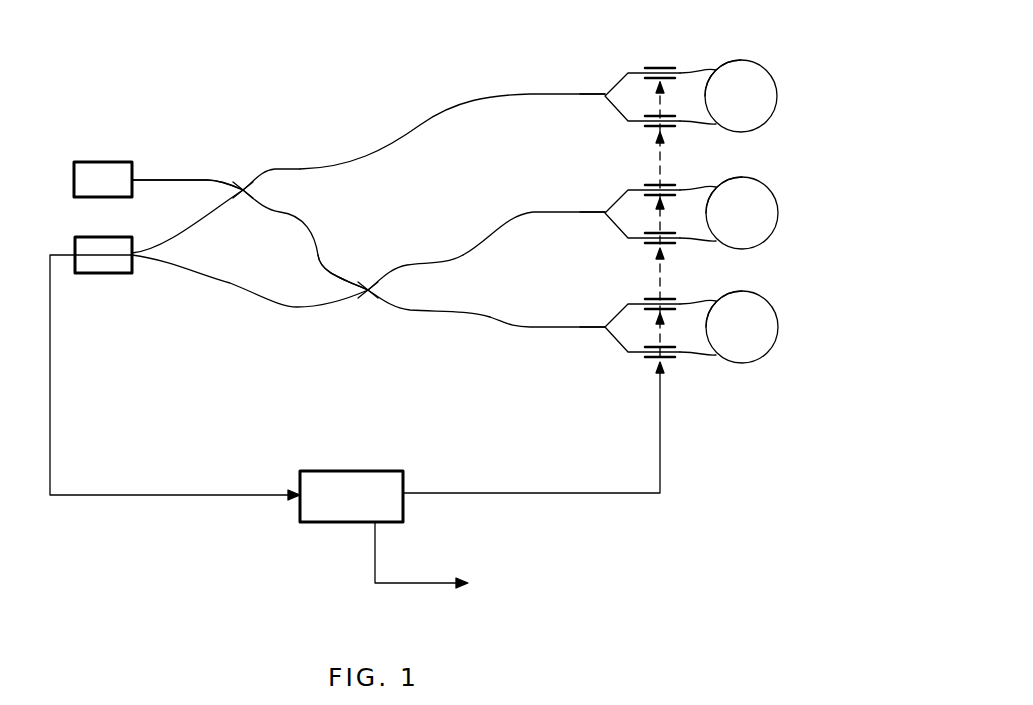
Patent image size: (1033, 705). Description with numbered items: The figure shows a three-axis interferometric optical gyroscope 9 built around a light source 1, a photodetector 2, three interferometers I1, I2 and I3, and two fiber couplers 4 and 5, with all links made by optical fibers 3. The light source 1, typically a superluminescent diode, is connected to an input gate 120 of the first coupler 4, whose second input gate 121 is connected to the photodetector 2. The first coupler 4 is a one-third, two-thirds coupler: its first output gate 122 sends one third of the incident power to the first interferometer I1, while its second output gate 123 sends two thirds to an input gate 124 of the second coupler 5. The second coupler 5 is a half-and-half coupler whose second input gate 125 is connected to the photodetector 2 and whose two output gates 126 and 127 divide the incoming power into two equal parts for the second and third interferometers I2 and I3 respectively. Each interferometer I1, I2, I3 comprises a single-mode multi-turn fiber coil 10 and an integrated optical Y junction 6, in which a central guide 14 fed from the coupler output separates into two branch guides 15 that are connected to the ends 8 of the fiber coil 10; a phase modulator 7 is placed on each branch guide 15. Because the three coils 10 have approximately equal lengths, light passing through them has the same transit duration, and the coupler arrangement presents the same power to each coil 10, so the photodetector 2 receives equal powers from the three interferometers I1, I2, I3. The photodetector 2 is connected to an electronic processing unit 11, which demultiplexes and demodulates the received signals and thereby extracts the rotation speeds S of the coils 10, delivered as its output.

The light source 1 is at (95, 162).
The photodetector 2 is at (97, 273).
The optical fibers 3 is at (455, 110).
The first coupler 4 is at (245, 178).
The second coupler 5 is at (368, 310).
The integrated optical Y junction 6 is at (608, 76).
The phase modulator 7 is at (667, 70).
The ends of fiber coils 8 is at (712, 68).
The optical gyroscope 9 is at (357, 98).
The single-mode optical fiber multi-turn coil 10 is at (778, 97).
The electronic processing unit 11 is at (333, 471).
The central guide 14 is at (587, 96).
The branch guides 15 is at (620, 232).
The input gate of first coupler 120 is at (217, 173).
The second input gate of first coupler 121 is at (214, 214).
The first output gate of first coupler 122 is at (273, 170).
The second output gate of first coupler 123 is at (262, 212).
The input gate of second coupler 124 is at (352, 274).
The second input gate of second coupler 125 is at (343, 304).
The output gate of second coupler 126 is at (396, 266).
The output gate of second coupler 127 is at (391, 306).
The first interferometer I1 is at (759, 52).
The second interferometer I2 is at (774, 179).
The third interferometer I3 is at (775, 296).
The rotation speeds S is at (434, 560).